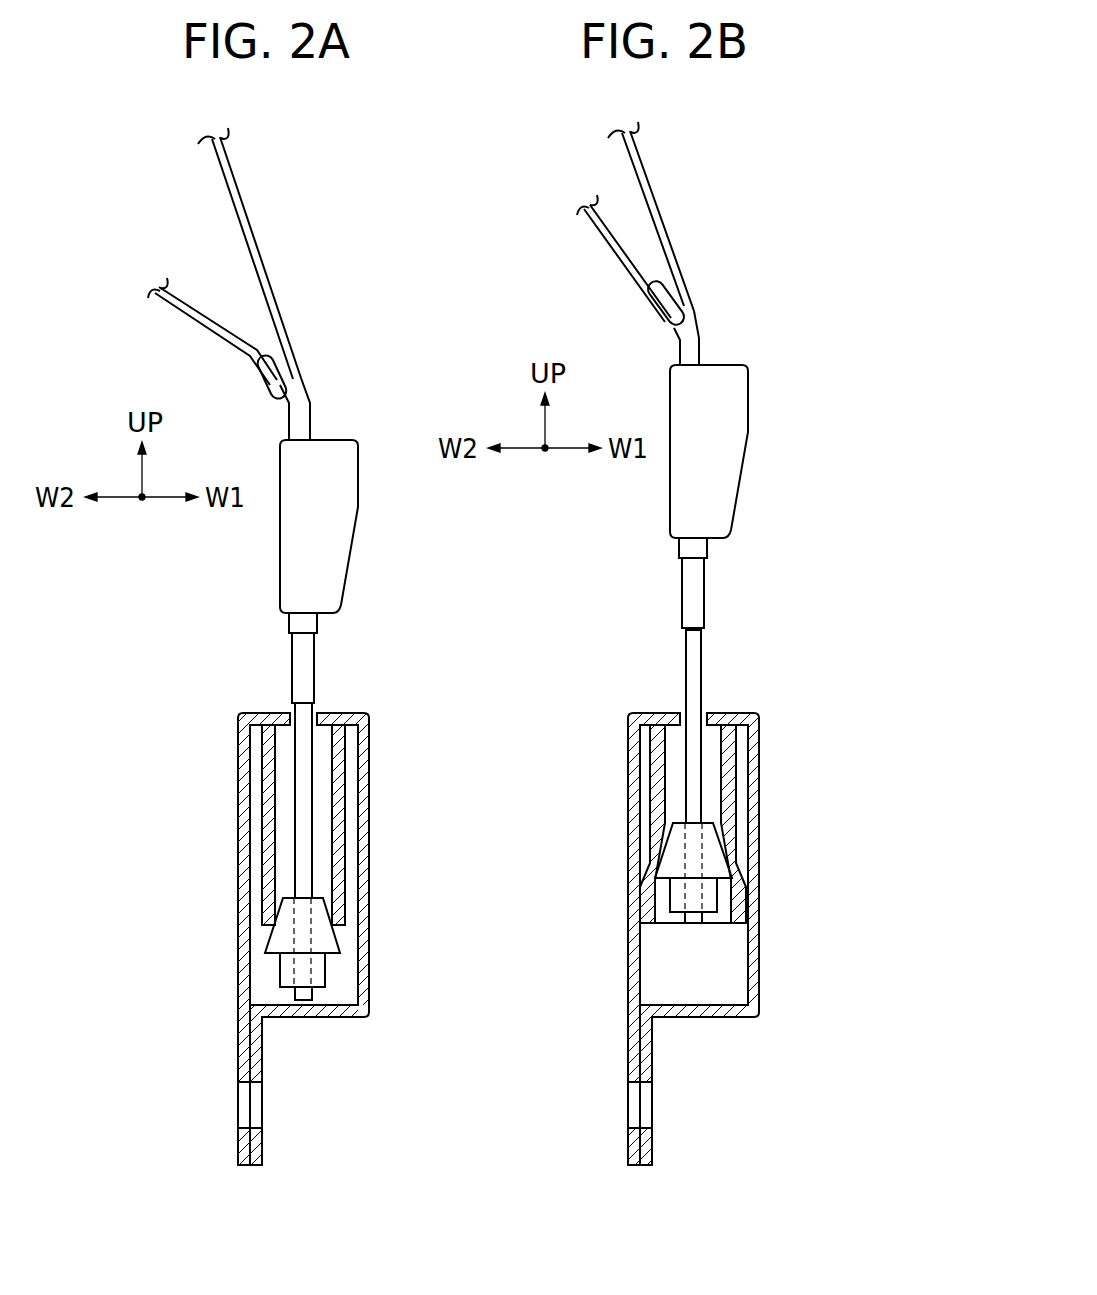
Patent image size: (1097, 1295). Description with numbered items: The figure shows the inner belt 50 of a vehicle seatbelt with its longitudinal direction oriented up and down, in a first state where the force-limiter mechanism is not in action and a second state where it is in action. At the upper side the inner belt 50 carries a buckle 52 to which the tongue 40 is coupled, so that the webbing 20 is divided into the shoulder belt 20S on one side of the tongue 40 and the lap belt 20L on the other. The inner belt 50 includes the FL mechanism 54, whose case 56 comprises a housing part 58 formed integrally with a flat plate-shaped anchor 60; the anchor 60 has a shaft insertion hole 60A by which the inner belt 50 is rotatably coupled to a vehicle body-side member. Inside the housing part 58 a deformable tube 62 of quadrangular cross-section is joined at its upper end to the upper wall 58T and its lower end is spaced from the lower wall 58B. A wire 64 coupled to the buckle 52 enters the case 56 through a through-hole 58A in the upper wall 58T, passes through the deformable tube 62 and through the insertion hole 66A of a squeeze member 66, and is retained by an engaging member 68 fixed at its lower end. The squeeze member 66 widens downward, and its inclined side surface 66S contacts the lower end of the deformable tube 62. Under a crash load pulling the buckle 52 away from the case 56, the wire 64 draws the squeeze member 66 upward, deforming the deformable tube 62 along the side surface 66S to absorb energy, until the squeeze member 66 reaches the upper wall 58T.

In FIG. 2A, the webbing 20 is at (233, 173).
In FIG. 2B, the webbing 20 is at (645, 170).
In FIG. 2A, the shoulder belt 20S is at (243, 206).
In FIG. 2B, the shoulder belt 20S is at (656, 200).
In FIG. 2A, the lap belt 20L is at (180, 310).
In FIG. 2B, the lap belt 20L is at (600, 232).
In FIG. 2A, the tongue 40 is at (307, 403).
In FIG. 2B, the tongue 40 is at (697, 330).
In FIG. 2A, the inner belt 50 is at (437, 621).
In FIG. 2B, the inner belt 50 is at (829, 548).
In FIG. 2A, the buckle 52 is at (338, 543).
In FIG. 2B, the buckle 52 is at (728, 468).
In FIG. 2A, the FL mechanism 54 is at (380, 760).
In FIG. 2B, the FL mechanism 54 is at (772, 760).
In FIG. 2A, the case 56 is at (372, 863).
In FIG. 2B, the case 56 is at (767, 863).
In FIG. 2A, the housing part 58 is at (363, 928).
In FIG. 2B, the housing part 58 is at (757, 930).
In FIG. 2A, the through-hole 58A is at (293, 713).
In FIG. 2B, the through-hole 58A is at (686, 713).
In FIG. 2A, the upper wall 58T is at (337, 713).
In FIG. 2B, the upper wall 58T is at (733, 713).
In FIG. 2A, the lower wall 58B is at (330, 1015).
In FIG. 2B, the lower wall 58B is at (723, 1015).
In FIG. 2A, the anchor 60 is at (257, 1060).
In FIG. 2B, the anchor 60 is at (652, 1060).
In FIG. 2A, the shaft insertion hole 60A is at (343, 1145).
In FIG. 2B, the shaft insertion hole 60A is at (734, 1145).
In FIG. 2A, the deformable tube 62 is at (337, 823).
In FIG. 2B, the deformable tube 62 is at (731, 823).
In FIG. 2A, the wire 64 is at (298, 792).
In FIG. 2B, the wire 64 is at (693, 760).
In FIG. 2A, the squeeze member 66 is at (334, 960).
In FIG. 2B, the squeeze member 66 is at (672, 862).
In FIG. 2A, the insertion hole 66A is at (303, 908).
In FIG. 2A, the side surface 66S is at (268, 937).
In FIG. 2B, the side surface 66S is at (673, 834).
In FIG. 2A, the engaging member 68 is at (287, 972).
In FIG. 2B, the engaging member 68 is at (673, 913).